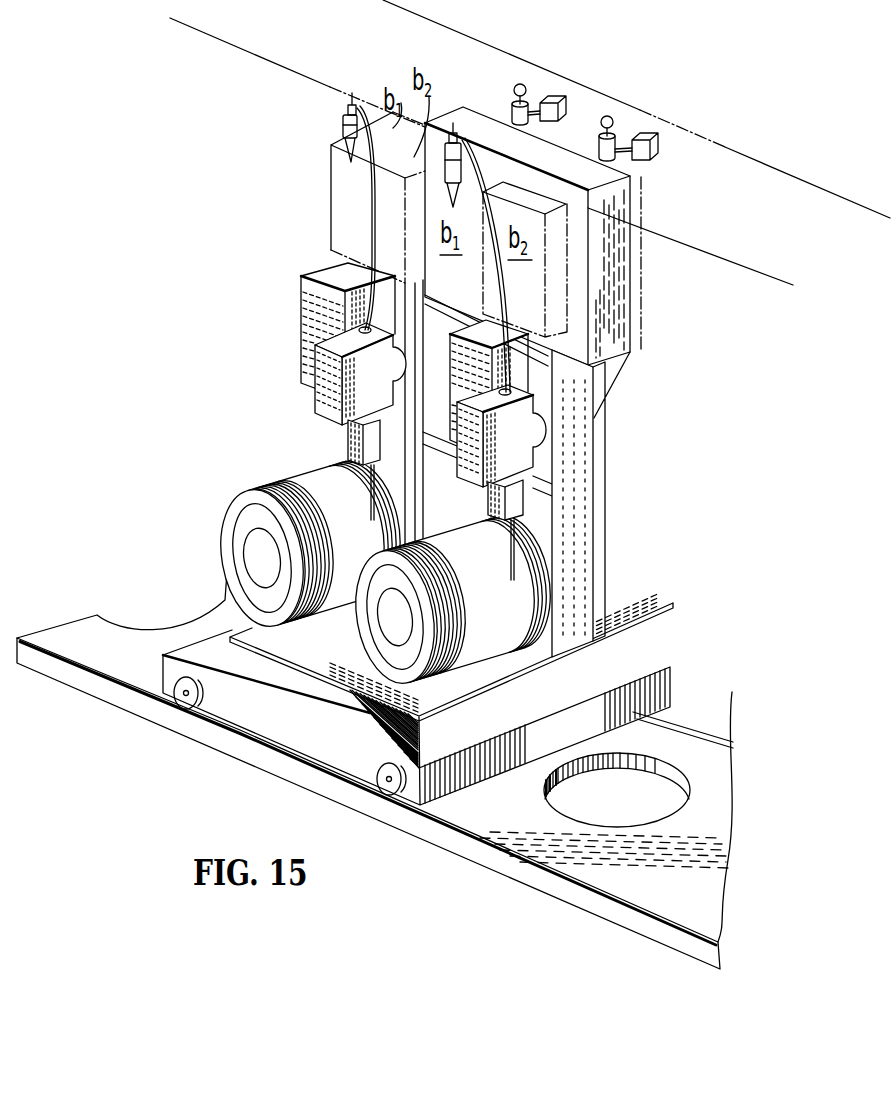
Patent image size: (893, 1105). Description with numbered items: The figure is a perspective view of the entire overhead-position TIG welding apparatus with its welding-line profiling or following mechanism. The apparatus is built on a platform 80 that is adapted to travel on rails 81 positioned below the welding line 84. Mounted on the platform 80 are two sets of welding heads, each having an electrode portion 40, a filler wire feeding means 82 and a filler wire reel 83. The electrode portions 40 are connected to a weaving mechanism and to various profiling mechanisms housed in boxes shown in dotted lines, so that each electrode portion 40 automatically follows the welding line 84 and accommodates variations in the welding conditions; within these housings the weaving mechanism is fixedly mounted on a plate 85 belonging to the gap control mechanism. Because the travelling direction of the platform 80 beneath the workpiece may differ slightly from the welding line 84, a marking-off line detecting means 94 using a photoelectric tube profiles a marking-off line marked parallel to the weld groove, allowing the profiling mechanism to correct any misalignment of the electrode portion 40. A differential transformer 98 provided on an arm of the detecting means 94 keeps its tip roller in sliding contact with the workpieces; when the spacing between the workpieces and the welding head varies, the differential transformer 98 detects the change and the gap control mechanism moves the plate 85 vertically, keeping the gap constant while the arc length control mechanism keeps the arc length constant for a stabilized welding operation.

The electrode portion 40 is at (343, 113).
The platform 80 is at (300, 719).
The rails 81 is at (707, 735).
The filler wire feeding means 82 is at (381, 392).
The filler wire reel 83 is at (253, 493).
The welding line 84 is at (728, 259).
The plate 85 is at (830, 194).
The marking-off line detecting means 94 is at (645, 136).
The differential transformer 98 is at (515, 97).